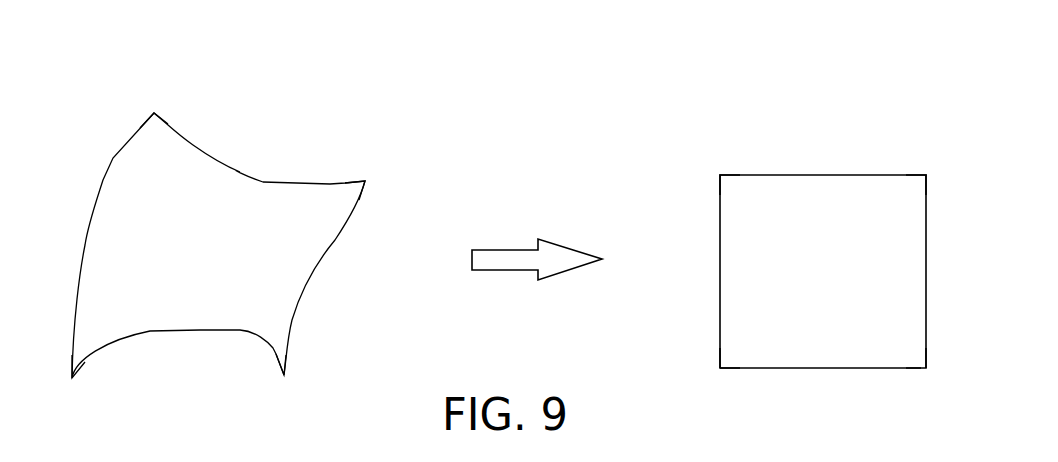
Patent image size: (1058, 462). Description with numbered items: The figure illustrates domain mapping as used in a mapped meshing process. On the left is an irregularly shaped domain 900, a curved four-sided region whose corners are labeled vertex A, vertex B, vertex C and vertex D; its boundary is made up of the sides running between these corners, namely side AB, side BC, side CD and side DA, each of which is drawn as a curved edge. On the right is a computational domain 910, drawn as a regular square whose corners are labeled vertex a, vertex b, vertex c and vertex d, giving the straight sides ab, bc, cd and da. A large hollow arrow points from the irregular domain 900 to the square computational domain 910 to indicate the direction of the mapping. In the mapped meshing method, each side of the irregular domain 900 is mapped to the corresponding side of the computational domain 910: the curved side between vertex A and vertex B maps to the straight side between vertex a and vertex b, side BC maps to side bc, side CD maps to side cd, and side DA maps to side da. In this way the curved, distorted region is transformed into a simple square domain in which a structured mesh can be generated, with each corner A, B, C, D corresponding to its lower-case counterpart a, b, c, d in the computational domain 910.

The physical domain 900 is at (226, 247).
The computational domain 910 is at (793, 248).
The vertex A is at (153, 100).
The vertex B is at (366, 170).
The vertex C is at (292, 385).
The vertex D is at (69, 389).
The vertex a is at (718, 167).
The vertex b is at (925, 167).
The vertex c is at (927, 378).
The vertex d is at (722, 382).